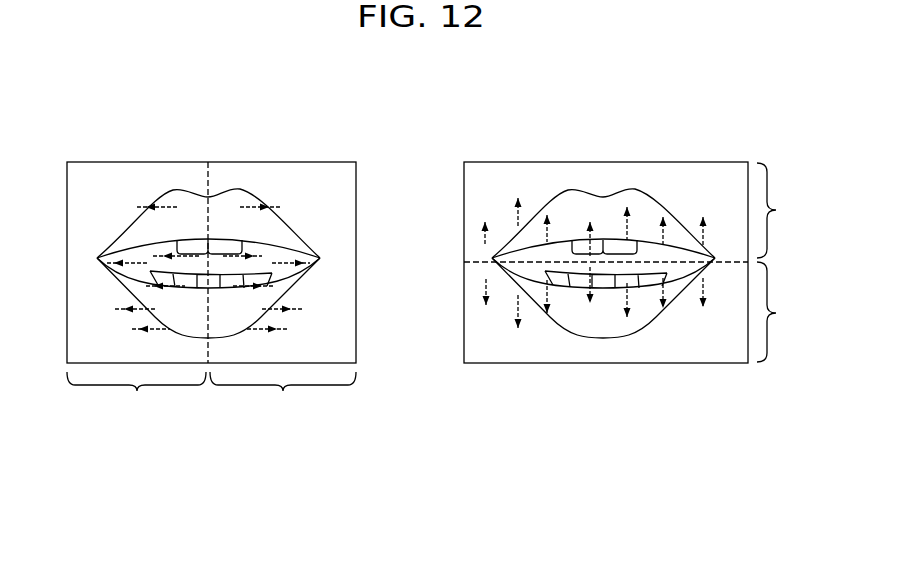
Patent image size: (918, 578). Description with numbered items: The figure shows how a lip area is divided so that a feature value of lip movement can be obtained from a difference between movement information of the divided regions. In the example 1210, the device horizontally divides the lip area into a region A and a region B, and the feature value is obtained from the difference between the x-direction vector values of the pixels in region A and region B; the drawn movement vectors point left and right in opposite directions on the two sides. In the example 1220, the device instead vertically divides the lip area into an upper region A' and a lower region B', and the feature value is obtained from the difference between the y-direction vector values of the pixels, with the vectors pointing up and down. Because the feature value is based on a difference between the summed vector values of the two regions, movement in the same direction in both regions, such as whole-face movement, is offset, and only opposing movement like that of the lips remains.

The horizontally divided lip area 1210 is at (196, 121).
The vertically divided lip area 1220 is at (589, 121).
The first divided region A is at (136, 397).
The second divided region B is at (283, 397).
The upper half region of lip image A' is at (781, 210).
The lower half region of lip image B' is at (781, 312).